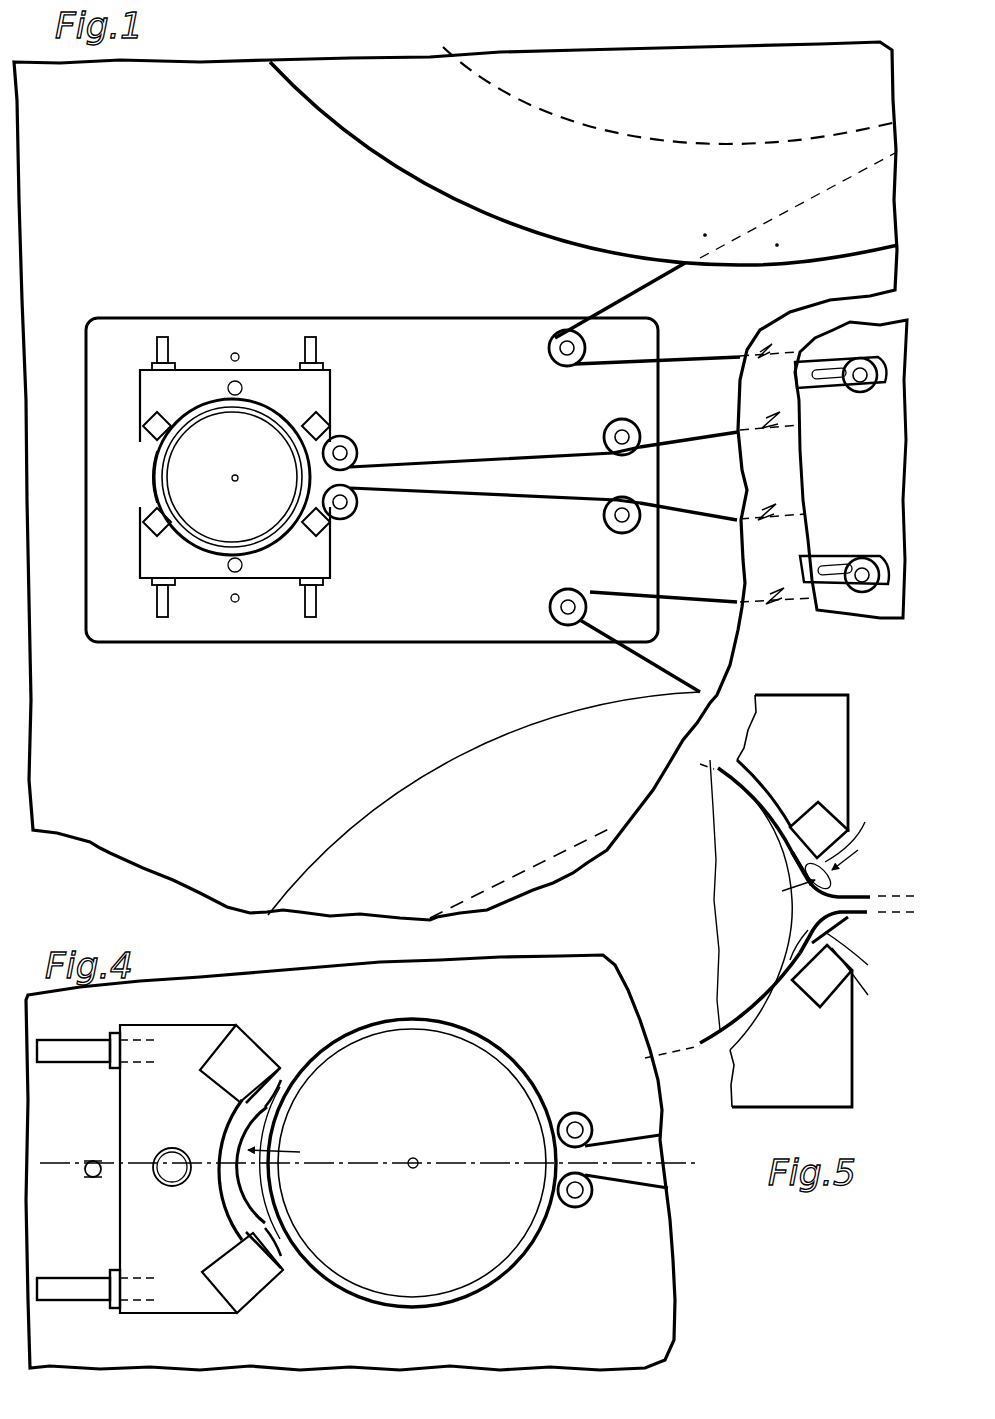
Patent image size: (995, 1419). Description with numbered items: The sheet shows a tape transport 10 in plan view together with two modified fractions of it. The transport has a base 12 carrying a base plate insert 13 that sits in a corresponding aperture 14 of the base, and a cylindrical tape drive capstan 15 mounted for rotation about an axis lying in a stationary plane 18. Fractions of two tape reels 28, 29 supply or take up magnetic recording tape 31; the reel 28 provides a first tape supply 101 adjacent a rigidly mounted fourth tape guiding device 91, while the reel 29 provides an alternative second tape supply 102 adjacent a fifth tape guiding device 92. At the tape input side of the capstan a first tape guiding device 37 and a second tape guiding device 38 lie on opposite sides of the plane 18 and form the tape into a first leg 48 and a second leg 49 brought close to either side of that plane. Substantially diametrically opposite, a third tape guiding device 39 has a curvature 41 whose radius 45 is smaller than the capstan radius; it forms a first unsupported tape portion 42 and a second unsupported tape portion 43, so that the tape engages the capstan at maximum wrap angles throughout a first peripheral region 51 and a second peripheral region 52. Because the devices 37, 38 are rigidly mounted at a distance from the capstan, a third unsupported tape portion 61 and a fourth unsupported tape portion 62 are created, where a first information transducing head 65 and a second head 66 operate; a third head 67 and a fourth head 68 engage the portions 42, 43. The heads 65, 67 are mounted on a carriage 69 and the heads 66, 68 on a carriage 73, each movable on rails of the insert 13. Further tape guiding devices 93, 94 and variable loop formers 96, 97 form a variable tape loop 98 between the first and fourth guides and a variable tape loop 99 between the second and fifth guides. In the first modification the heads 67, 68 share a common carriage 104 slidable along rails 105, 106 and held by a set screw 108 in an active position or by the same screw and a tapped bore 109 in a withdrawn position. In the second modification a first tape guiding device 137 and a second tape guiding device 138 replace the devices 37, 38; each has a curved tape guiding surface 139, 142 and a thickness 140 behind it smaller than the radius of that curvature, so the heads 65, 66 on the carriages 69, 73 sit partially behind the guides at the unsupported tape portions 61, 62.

In FIG. 1, the apparatus 10 is at (230, 52).
In FIG. 1, the base 12 is at (112, 855).
In FIG. 1, the base plate insert 13 is at (292, 633).
In FIG. 4, the base plate insert 13 is at (660, 1315).
In FIG. 1, the aperture 14 is at (413, 640).
In FIG. 1, the cylindrical tape drive capstan 15 is at (232, 477).
In FIG. 4, the cylindrical tape drive capstan 15 is at (412, 1163).
In FIG. 5, the cylindrical tape drive capstan 15 is at (760, 918).
In FIG. 4, the plane 18 is at (507, 1160).
In FIG. 1, the tape reel 28 is at (487, 205).
In FIG. 1, the tape reel 29 is at (378, 812).
In FIG. 1, the magnetic recording tape 31 is at (618, 308).
In FIG. 1, the first tape guiding device 37 is at (355, 440).
In FIG. 4, the first tape guiding device 37 is at (568, 1113).
In FIG. 1, the second tape guiding device 38 is at (355, 510).
In FIG. 4, the second tape guiding device 38 is at (570, 1210).
In FIG. 1, the third tape guiding device 39 is at (152, 490).
In FIG. 4, the third tape guiding device 39 is at (262, 1190).
In FIG. 4, the curvature 41 is at (225, 1195).
In FIG. 4, the first unsupported tape portion 42 is at (270, 1108).
In FIG. 4, the second unsupported tape portion 43 is at (288, 1278).
In FIG. 4, the radius 45 is at (285, 1165).
In FIG. 1, the first leg 48 is at (408, 462).
In FIG. 4, the first leg 48 is at (650, 1136).
In FIG. 5, the first leg 48 is at (866, 896).
In FIG. 1, the second leg 49 is at (400, 494).
In FIG. 4, the second leg 49 is at (655, 1195).
In FIG. 5, the second leg 49 is at (865, 914).
In FIG. 4, the first peripheral region 51 is at (402, 1018).
In FIG. 5, the first peripheral region 51 is at (762, 812).
In FIG. 4, the second peripheral region 52 is at (365, 1312).
In FIG. 5, the second peripheral region 52 is at (760, 1003).
In FIG. 5, the third unsupported tape portion 61 is at (802, 870).
In FIG. 5, the fourth unsupported tape portion 62 is at (800, 937).
In FIG. 1, the first information transducing device 65 is at (322, 420).
In FIG. 5, the first information transducing device 65 is at (820, 812).
In FIG. 1, the second information transducing device 66 is at (330, 538).
In FIG. 5, the second information transducing device 66 is at (828, 990).
In FIG. 1, the third information transducing device 67 is at (148, 438).
In FIG. 4, the third information transducing device 67 is at (215, 1062).
In FIG. 1, the fourth information transducing device 68 is at (140, 532).
In FIG. 4, the fourth information transducing device 68 is at (218, 1270).
In FIG. 1, the carriage 69 is at (320, 380).
In FIG. 5, the carriage 69 is at (845, 712).
In FIG. 1, the carriage 73 is at (325, 580).
In FIG. 5, the carriage 73 is at (826, 1095).
In FIG. 1, the fourth tape guiding device 91 is at (585, 352).
In FIG. 1, the fifth tape guiding device 92 is at (586, 614).
In FIG. 1, the tape guiding device 93 is at (605, 428).
In FIG. 1, the tape guiding device 94 is at (606, 528).
In FIG. 1, the variable loop former 96 is at (843, 400).
In FIG. 1, the variable loop former 97 is at (858, 550).
In FIG. 1, the variable tape loop 98 is at (718, 433).
In FIG. 1, the variable tape loop 99 is at (716, 596).
In FIG. 1, the first tape supply 101 is at (600, 132).
In FIG. 1, the second tape supply 102 is at (560, 843).
In FIG. 4, the common carriage 104 is at (133, 1025).
In FIG. 4, the rail 105 is at (92, 1038).
In FIG. 4, the rail 106 is at (95, 1305).
In FIG. 4, the set screw 108 is at (182, 1148).
In FIG. 4, the tapped bore 109 is at (78, 1160).
In FIG. 5, the first tape guiding device 137 is at (866, 855).
In FIG. 5, the second tape guiding device 138 is at (867, 957).
In FIG. 5, the tape guiding surface 139 is at (786, 893).
In FIG. 5, the thickness 140 is at (865, 838).
In FIG. 5, the tape guiding surface 142 is at (871, 981).